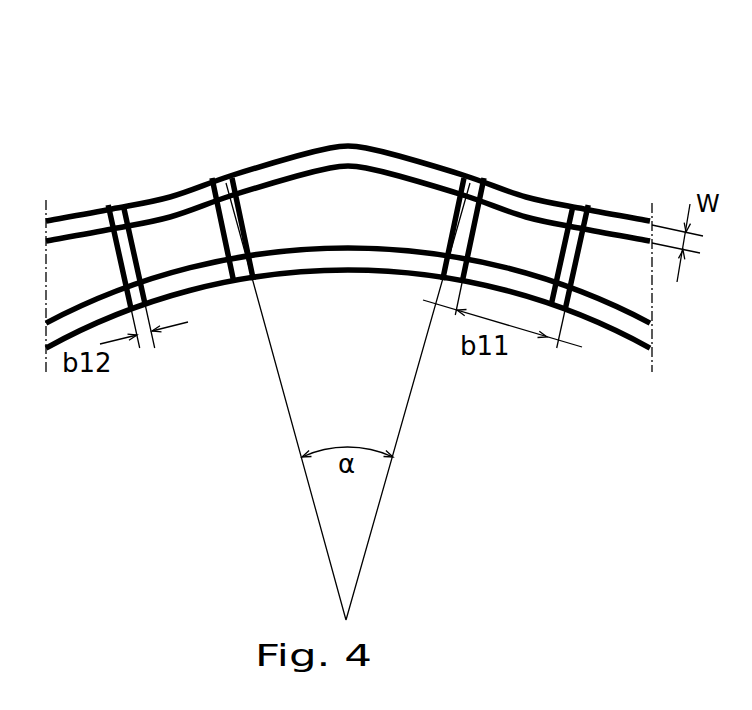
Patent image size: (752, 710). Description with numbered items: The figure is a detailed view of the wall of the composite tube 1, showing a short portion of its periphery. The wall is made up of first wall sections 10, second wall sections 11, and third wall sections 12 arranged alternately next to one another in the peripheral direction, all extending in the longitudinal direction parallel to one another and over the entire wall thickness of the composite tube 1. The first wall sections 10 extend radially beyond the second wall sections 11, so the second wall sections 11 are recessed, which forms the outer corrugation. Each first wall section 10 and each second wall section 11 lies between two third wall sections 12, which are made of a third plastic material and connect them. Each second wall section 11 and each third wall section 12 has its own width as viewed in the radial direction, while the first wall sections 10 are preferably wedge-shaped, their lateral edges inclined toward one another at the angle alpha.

The composite tube 1 is at (176, 88).
The first wall section 10 is at (83, 252).
The second wall section 11 is at (168, 237).
The third wall section 12 is at (115, 220).